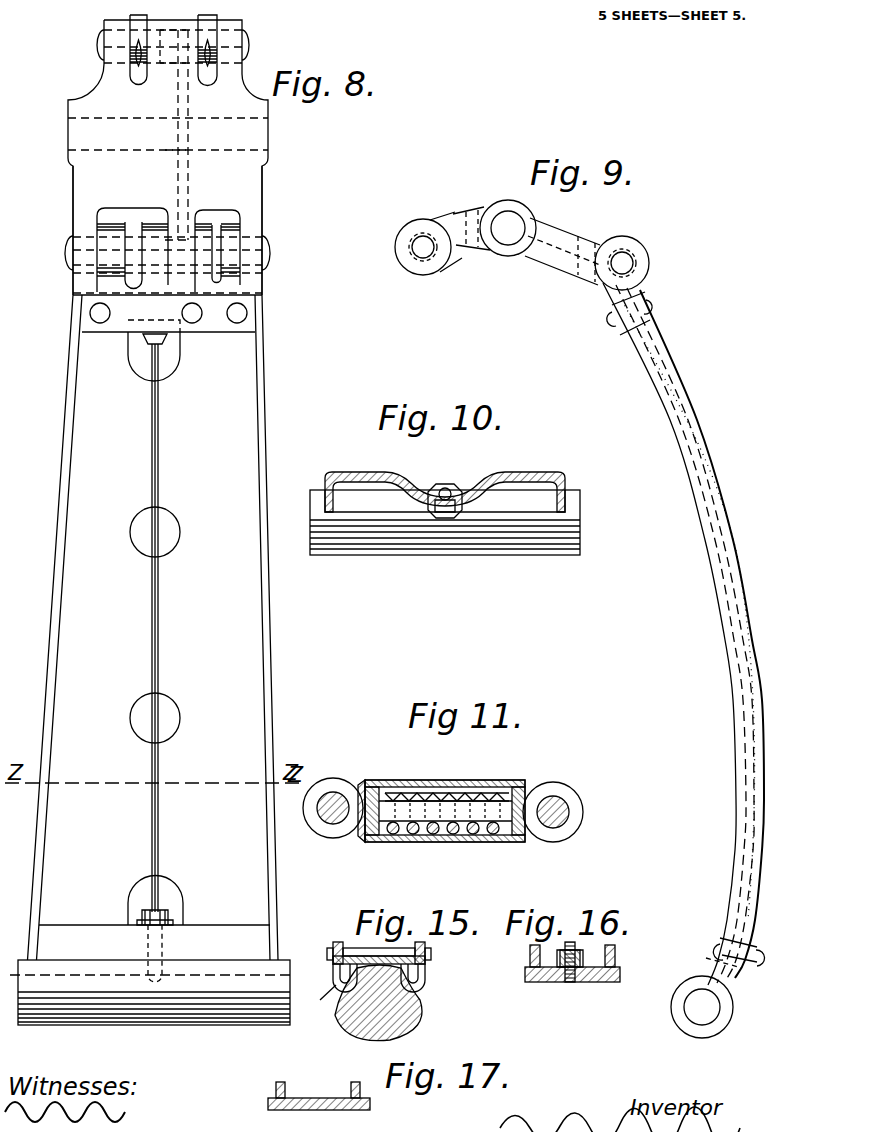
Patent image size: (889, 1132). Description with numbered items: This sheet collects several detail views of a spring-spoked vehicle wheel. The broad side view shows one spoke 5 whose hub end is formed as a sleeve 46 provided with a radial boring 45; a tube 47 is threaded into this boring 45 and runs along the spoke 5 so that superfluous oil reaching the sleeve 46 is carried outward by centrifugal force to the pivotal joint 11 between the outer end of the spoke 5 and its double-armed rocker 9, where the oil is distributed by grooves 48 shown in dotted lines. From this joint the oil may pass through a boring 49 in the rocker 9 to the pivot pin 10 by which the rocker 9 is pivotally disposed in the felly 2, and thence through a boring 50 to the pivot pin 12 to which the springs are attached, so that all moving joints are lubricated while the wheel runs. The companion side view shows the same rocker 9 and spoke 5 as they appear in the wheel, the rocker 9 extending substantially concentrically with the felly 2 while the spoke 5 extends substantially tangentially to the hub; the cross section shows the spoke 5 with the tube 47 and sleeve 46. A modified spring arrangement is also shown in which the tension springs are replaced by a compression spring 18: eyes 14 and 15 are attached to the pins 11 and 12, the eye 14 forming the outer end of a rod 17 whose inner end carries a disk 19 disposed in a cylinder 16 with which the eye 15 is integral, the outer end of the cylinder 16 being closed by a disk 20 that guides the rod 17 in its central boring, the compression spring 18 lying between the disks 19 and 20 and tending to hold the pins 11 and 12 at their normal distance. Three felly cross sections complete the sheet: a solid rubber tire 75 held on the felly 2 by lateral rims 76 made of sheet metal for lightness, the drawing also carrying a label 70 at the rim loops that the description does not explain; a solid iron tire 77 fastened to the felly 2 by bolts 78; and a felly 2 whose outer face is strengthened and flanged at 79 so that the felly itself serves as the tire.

In FIG. 15, the felly 2 is at (345, 945).
In FIG. 16, the felly 2 is at (630, 950).
In FIG. 17, the felly 2 is at (278, 1085).
In FIG. 9, the spoke 5 is at (722, 478).
In FIG. 10, the spoke 5 is at (362, 472).
In FIG. 8, the double-armed rocker 9 is at (245, 188).
In FIG. 8, the pivot pin 10 is at (268, 132).
In FIG. 8, the pivotal joint 11 is at (266, 258).
In FIG. 9, the pivotal joint 11 is at (630, 258).
In FIG. 11, the pivotal joint 11 is at (560, 800).
In FIG. 8, the pivot pin 12 is at (98, 45).
In FIG. 9, the pivot pin 12 is at (423, 247).
In FIG. 11, the pivot pin 12 is at (340, 800).
In FIG. 11, the eye 14 is at (583, 814).
In FIG. 11, the eye 15 is at (330, 830).
In FIG. 11, the cylinder 16 is at (445, 780).
In FIG. 11, the rod 17 is at (436, 822).
In FIG. 11, the compression spring 18 is at (396, 834).
In FIG. 11, the disk 19 is at (363, 840).
In FIG. 11, the disk 20 is at (518, 835).
In FIG. 8, the radial boring 45 is at (163, 950).
In FIG. 9, the radial boring 45 is at (722, 964).
In FIG. 9, the sleeve 46 is at (718, 1020).
In FIG. 10, the sleeve 46 is at (365, 550).
In FIG. 8, the tube 47 is at (152, 838).
In FIG. 9, the tube 47 is at (712, 526).
In FIG. 10, the tube 47 is at (460, 488).
In FIG. 8, the grooves 48 is at (96, 246).
In FIG. 8, the boring 49 is at (176, 180).
In FIG. 9, the boring 49 is at (565, 250).
In FIG. 8, the boring 50 is at (178, 105).
In FIG. 9, the boring 50 is at (478, 210).
In FIG. 15, the loop 70 is at (430, 972).
In FIG. 15, the solid rubber tire 75 is at (425, 1008).
In FIG. 15, the rims 76 is at (317, 999).
In FIG. 16, the solid iron tire 77 is at (610, 982).
In FIG. 16, the bolts 78 is at (565, 982).
In FIG. 17, the strengthened and flanged outer face 79 is at (320, 1098).